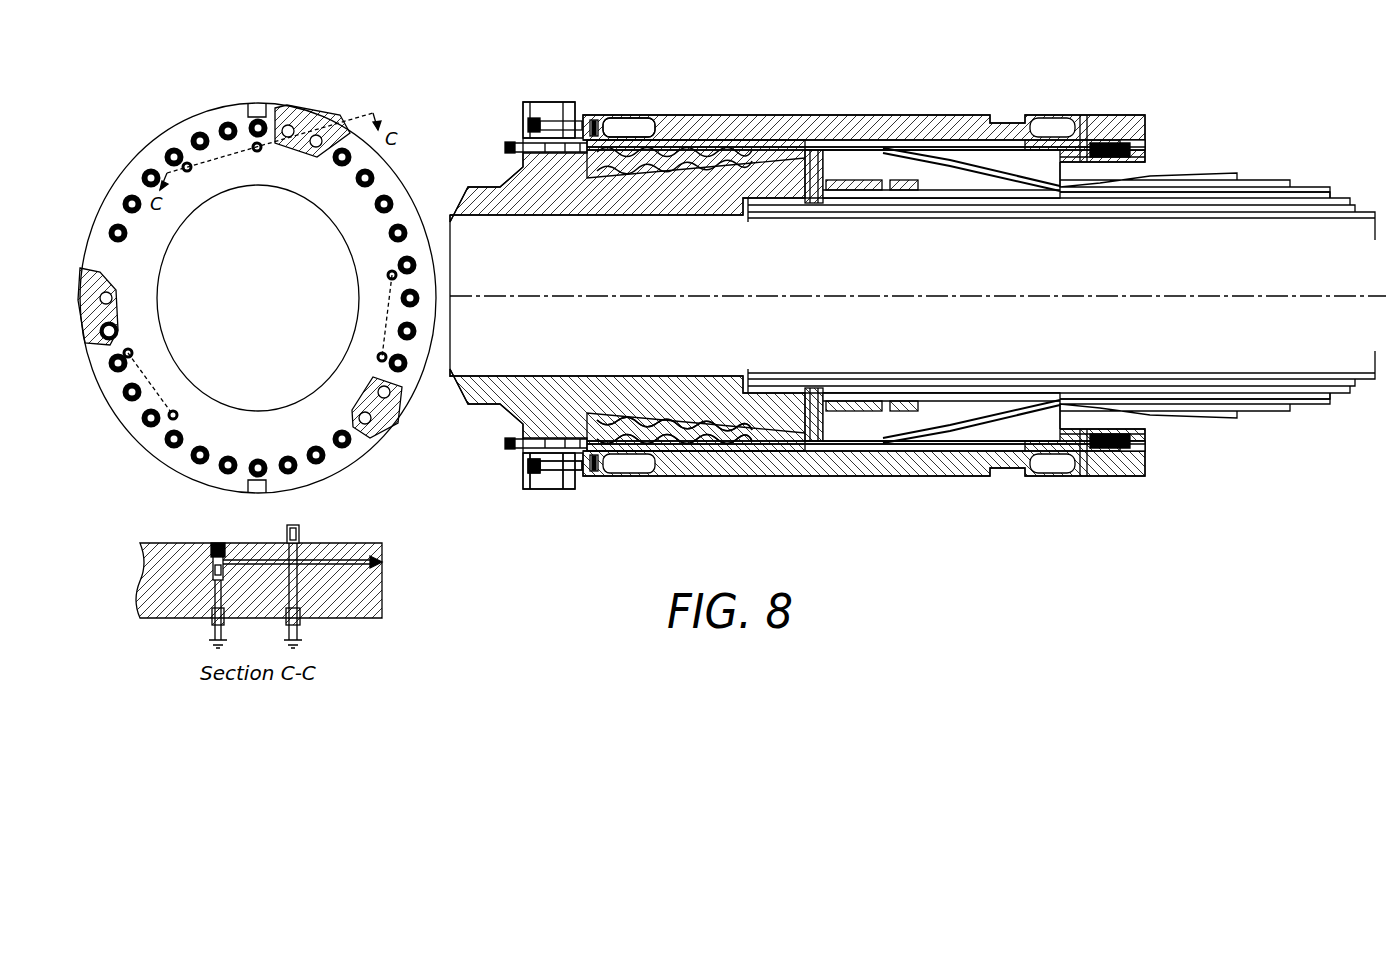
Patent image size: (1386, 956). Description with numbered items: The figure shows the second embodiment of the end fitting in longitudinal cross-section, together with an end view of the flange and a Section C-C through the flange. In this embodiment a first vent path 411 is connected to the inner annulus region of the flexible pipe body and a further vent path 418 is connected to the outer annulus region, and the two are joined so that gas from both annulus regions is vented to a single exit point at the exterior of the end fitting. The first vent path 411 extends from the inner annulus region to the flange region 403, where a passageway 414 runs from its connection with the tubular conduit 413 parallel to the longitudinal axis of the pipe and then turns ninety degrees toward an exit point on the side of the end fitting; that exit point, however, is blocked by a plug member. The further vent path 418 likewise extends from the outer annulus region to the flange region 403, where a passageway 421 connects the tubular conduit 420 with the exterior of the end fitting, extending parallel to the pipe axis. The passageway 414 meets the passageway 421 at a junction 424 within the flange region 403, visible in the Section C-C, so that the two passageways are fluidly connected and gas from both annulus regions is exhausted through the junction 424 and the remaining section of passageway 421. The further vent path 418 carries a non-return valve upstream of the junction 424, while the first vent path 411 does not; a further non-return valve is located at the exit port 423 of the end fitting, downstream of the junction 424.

The flange region 403 is at (550, 100).
The tubular conduit 420 is at (658, 140).
The further vent path 418 is at (1045, 147).
The passageway 414 is at (215, 593).
The first vent path 411 is at (650, 447).
The tubular conduit 413 is at (700, 447).
The junction 424 is at (287, 543).
The exit port 423 is at (300, 540).
The passageway 421 is at (300, 597).